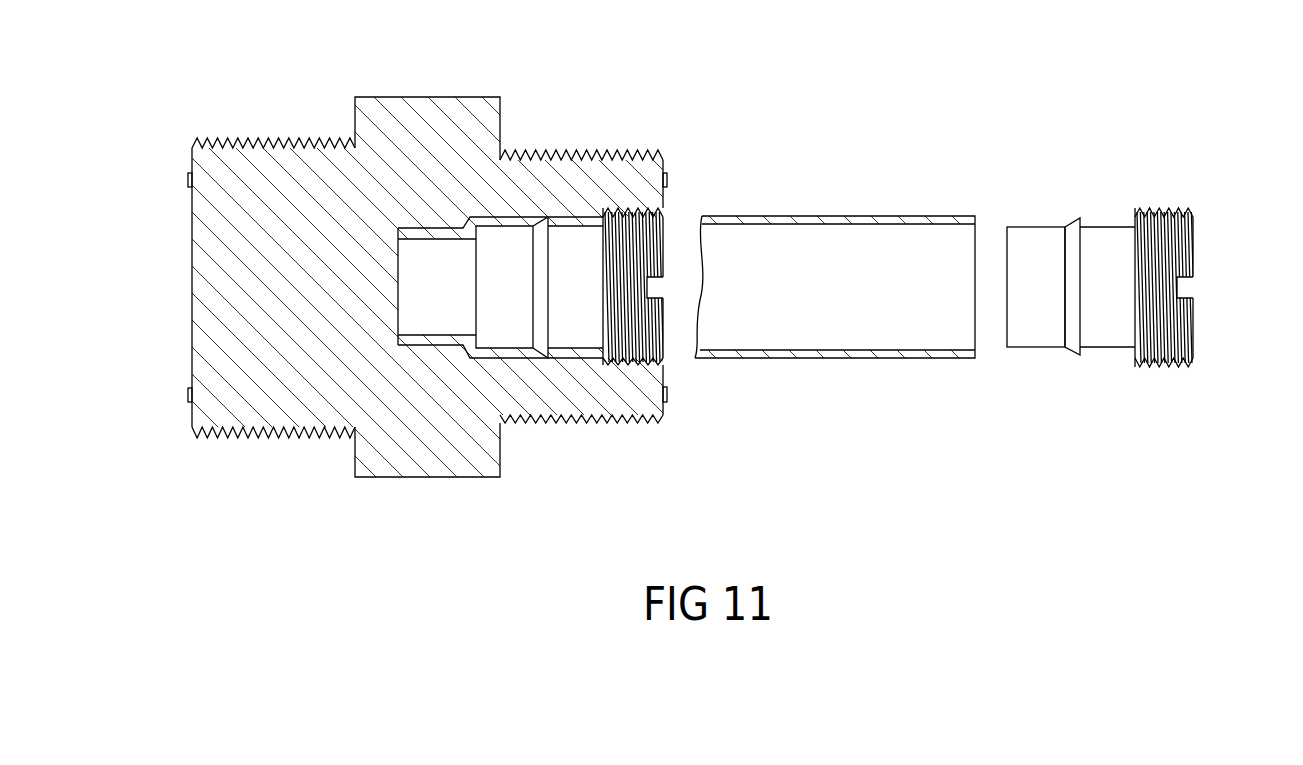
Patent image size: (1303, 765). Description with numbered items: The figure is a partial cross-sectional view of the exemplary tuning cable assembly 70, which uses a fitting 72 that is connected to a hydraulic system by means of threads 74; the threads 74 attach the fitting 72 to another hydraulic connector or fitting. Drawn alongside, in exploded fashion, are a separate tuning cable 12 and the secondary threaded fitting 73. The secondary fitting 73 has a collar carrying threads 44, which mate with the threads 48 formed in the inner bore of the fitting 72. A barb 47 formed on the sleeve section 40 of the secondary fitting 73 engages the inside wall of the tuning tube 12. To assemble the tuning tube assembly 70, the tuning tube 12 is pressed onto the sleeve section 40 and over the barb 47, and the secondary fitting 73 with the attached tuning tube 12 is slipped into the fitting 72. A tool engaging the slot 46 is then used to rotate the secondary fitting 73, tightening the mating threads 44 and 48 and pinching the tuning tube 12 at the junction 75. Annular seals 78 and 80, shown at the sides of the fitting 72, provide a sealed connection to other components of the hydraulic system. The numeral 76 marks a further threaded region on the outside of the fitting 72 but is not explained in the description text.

The tuning cable 12 is at (830, 353).
The sleeve section 40 is at (1036, 226).
The threads 44 is at (1163, 372).
The slot 46 is at (1192, 287).
The barb 47 is at (1073, 343).
The threads 48 is at (620, 207).
The tuning cable assembly 70 is at (326, 492).
The fitting 72 is at (452, 126).
The secondary threaded fitting 73 is at (668, 221).
The threads 74 is at (247, 137).
The junction 75 is at (460, 354).
The external threads 76 is at (555, 403).
The annular seal 78 is at (668, 394).
The annular seal 80 is at (188, 395).